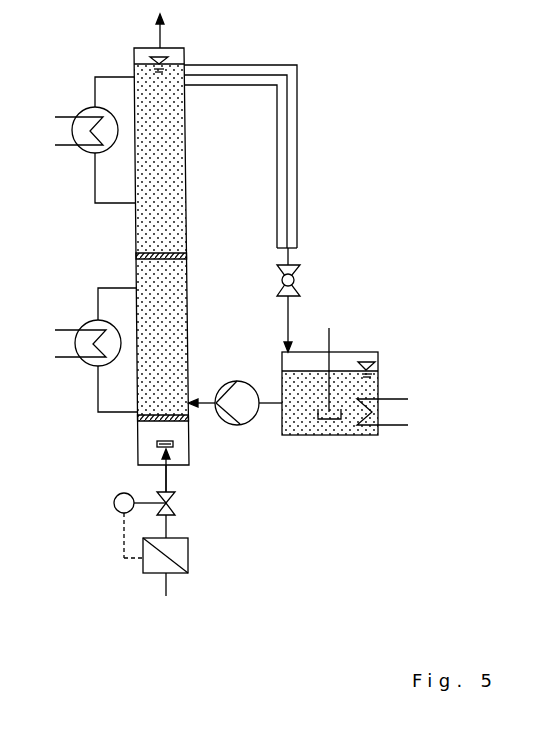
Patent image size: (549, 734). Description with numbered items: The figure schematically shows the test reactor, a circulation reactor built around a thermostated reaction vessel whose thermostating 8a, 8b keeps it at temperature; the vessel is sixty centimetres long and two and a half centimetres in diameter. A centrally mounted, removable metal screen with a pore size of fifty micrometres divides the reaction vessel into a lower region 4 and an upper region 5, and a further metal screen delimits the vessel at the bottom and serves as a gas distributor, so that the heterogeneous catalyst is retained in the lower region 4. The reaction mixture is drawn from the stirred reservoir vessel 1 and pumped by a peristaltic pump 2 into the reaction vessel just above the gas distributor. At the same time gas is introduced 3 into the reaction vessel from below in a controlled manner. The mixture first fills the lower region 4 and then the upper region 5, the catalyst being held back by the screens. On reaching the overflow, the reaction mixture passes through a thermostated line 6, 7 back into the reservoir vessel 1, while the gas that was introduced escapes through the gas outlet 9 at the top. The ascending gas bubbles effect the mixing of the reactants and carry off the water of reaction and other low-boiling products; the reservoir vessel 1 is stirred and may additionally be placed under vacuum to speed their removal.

The stirred reservoir vessel 1 is at (345, 396).
The peristaltic pump 2 is at (235, 419).
The controlled gas introduction 3 is at (164, 530).
The lower region of the reaction vessel 4 is at (173, 340).
The upper region of the reaction vessel 5 is at (172, 161).
The thermostated line 6 is at (253, 156).
The thermostated line 7 is at (302, 300).
The thermostating 8a is at (96, 350).
The thermostating 8b is at (95, 140).
The gas outlet 9 is at (174, 30).